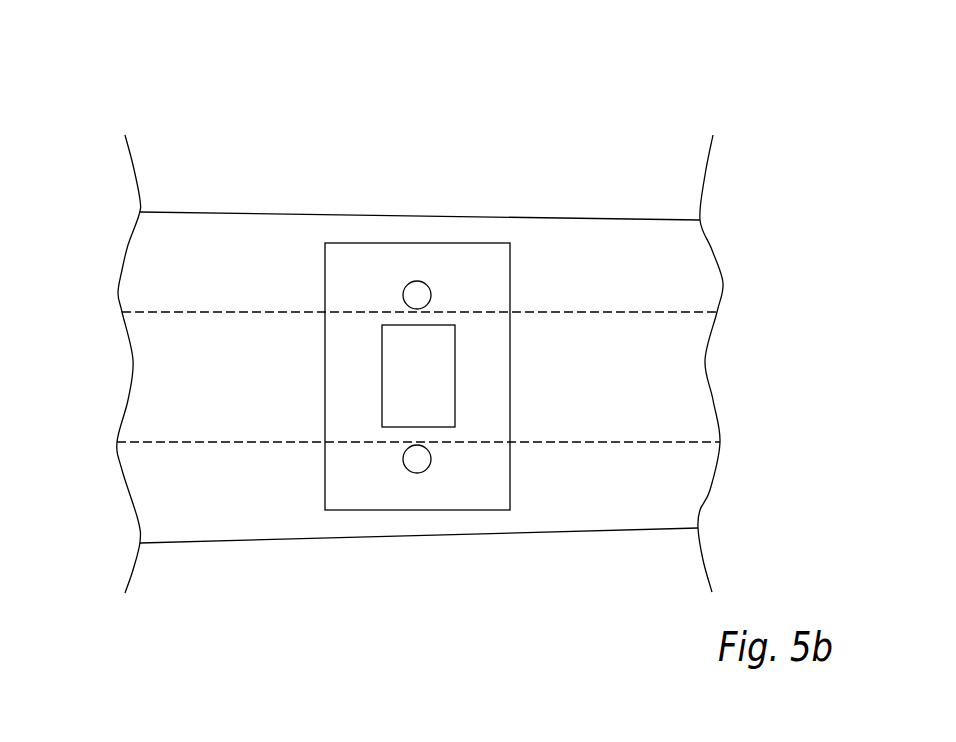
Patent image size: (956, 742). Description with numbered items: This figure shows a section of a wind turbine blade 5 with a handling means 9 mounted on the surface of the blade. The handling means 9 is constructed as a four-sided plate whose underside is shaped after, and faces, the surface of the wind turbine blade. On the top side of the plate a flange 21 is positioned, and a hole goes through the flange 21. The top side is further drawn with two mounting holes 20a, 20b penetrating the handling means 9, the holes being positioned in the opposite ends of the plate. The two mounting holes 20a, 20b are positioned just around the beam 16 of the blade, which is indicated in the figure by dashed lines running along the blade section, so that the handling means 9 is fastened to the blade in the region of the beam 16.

The profile rail 5 is at (228, 252).
The handling means 9 is at (494, 263).
The beam 16 is at (172, 422).
The mounting hole 20a is at (417, 281).
The mounting hole 20b is at (413, 460).
The flange 21 is at (397, 357).